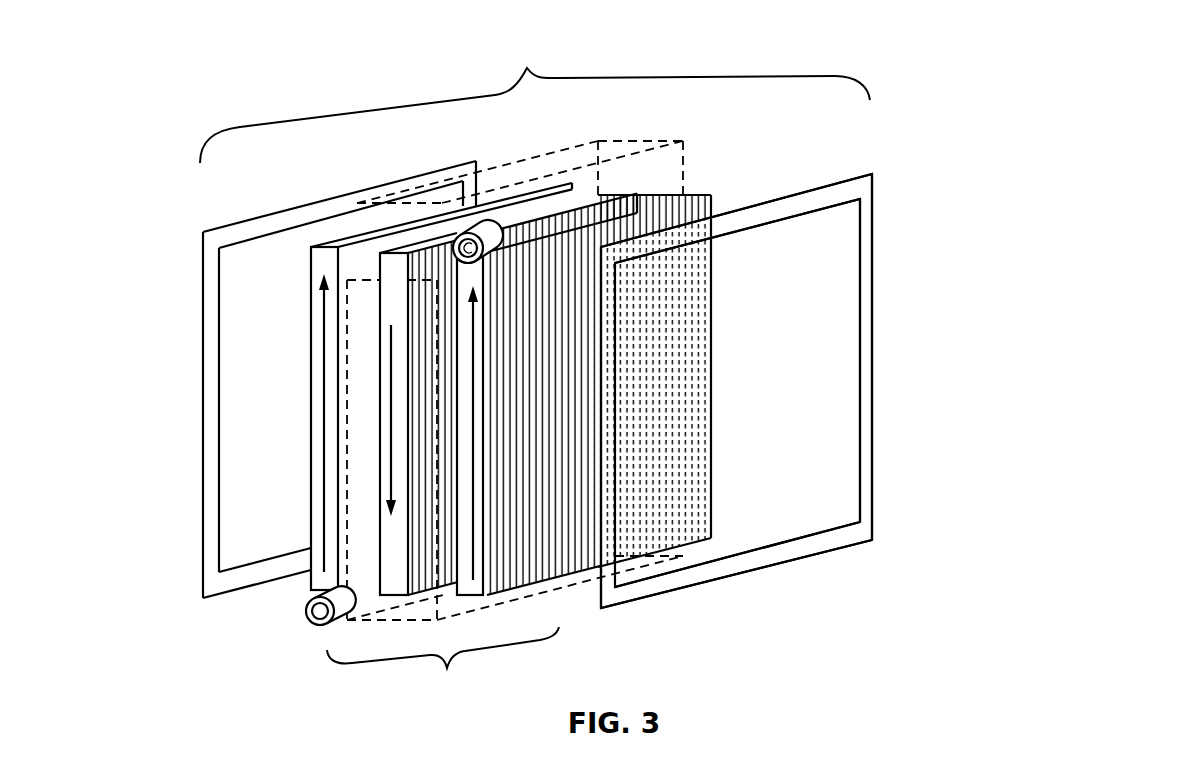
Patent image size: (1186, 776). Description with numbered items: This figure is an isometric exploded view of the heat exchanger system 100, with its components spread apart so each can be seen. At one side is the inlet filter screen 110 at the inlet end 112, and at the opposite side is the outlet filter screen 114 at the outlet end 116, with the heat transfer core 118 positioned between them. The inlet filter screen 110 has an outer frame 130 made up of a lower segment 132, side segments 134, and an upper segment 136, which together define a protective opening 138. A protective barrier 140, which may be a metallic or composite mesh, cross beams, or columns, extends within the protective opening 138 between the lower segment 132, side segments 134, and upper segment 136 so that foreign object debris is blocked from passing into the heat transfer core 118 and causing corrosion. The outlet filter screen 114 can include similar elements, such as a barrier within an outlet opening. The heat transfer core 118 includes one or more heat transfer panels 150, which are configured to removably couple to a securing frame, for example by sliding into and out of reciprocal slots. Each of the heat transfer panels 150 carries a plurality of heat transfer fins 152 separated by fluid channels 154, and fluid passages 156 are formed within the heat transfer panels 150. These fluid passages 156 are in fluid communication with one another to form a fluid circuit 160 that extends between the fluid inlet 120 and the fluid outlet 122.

The heat exchanger system 100 is at (535, 96).
The inlet filter screen 110 is at (880, 444).
The inlet end 112 is at (834, 408).
The outlet filter screen 114 is at (218, 404).
The outlet end 116 is at (200, 345).
The heat transfer core 118 is at (505, 420).
The fluid inlet 120 is at (308, 615).
The fluid outlet 122 is at (470, 236).
The outer frame 130 is at (830, 538).
The lower segment 132 is at (724, 578).
The side segments 134 is at (878, 480).
The upper segment 136 is at (783, 205).
The protective opening 138 is at (812, 348).
The protective barrier 140 is at (830, 296).
The heat transfer panels 150 is at (311, 533).
The heat transfer fins 152 is at (556, 365).
The fluid channels 154 is at (528, 400).
The fluid passages 156 is at (392, 377).
The fluid circuit 160 is at (320, 492).